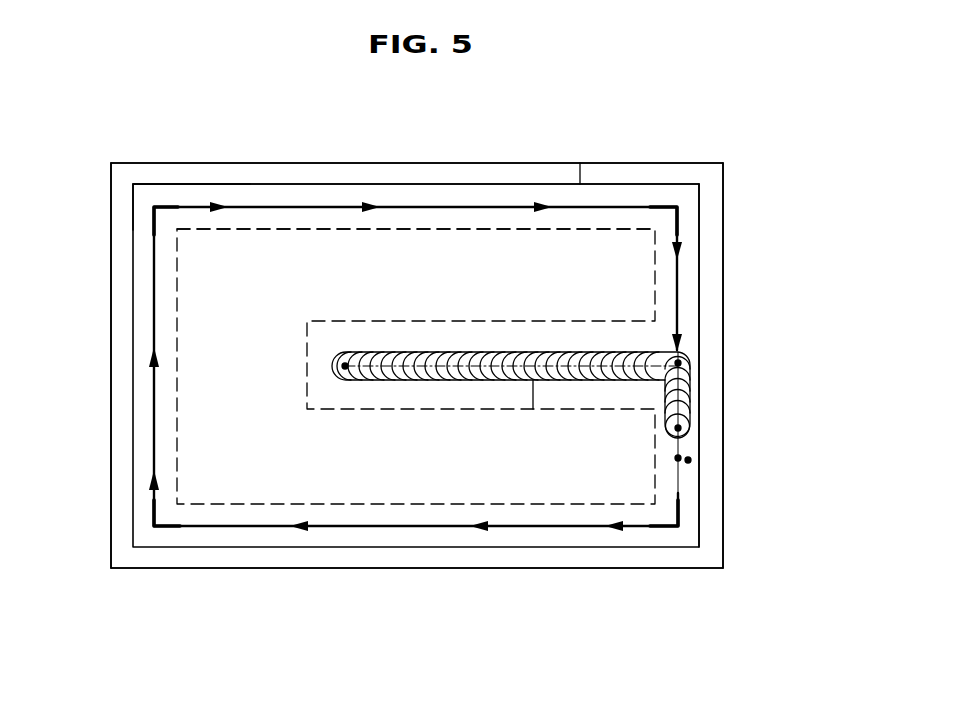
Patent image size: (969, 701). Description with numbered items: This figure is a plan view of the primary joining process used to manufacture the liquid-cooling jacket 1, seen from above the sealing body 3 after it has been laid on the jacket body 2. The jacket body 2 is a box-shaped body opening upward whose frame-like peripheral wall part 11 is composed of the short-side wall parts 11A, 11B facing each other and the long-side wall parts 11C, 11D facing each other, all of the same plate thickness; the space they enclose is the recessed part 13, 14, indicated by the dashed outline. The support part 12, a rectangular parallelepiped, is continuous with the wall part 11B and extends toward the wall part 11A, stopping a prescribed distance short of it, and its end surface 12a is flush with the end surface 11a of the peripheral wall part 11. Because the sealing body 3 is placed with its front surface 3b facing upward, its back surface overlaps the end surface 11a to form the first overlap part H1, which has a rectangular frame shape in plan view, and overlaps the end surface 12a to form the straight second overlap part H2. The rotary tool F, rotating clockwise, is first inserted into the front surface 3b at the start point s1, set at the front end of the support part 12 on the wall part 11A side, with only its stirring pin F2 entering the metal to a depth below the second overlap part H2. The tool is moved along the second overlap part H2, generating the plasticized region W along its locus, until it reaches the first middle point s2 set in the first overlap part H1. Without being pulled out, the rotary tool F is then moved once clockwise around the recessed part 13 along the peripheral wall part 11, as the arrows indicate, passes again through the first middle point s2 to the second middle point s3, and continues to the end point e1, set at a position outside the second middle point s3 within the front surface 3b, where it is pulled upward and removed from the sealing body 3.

The antenna device 1 is at (693, 123).
The jacket body 2 is at (733, 293).
The sealing body 3 is at (715, 232).
The front surface 3b is at (173, 195).
The peripheral wall part 11 is at (220, 503).
The wall part 11A is at (112, 368).
The wall part 11B is at (724, 544).
The wall part 11C is at (413, 162).
The wall part 11D is at (415, 570).
The end surface 11a is at (495, 177).
The support part 12 is at (416, 366).
The end surface 12a is at (383, 410).
The recessed part 13 is at (416, 188).
The magnetic core 14 is at (287, 258).
The first overlap part H1 is at (580, 183).
The second overlap part H2 is at (534, 410).
The plasticized region W is at (418, 365).
The start point s1 is at (345, 363).
The first middle point s2 is at (681, 363).
The second middle point s3 is at (679, 461).
The end point e1 is at (691, 460).
The rotary tool F is at (739, 413).
The stirring pin F2 is at (681, 428).